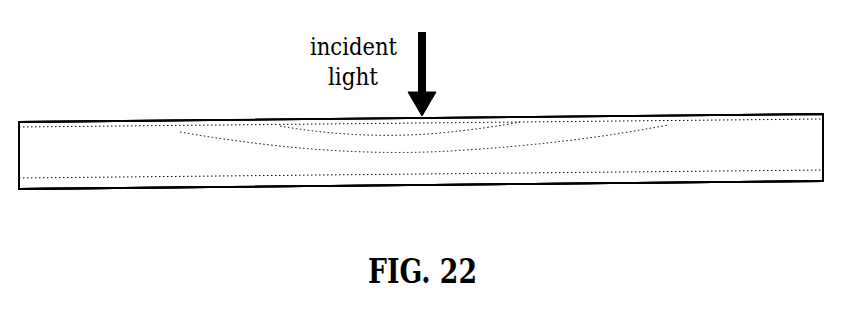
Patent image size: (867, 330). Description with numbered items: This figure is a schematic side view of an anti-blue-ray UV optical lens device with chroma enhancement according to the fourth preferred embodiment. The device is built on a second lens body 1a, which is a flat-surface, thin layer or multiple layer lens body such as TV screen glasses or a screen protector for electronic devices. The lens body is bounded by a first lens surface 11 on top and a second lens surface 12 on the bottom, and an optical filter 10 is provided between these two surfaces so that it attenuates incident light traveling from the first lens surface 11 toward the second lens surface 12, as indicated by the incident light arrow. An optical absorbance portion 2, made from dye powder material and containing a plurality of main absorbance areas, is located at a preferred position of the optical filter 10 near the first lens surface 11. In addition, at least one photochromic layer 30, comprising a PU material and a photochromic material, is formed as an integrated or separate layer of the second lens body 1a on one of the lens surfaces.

The second lens body 1a is at (668, 80).
The optical absorbance portion 2 is at (512, 122).
The optical filter 10 is at (582, 113).
The first lens surface 11 is at (695, 113).
The second lens surface 12 is at (695, 182).
The photochromic layer 30 is at (150, 186).